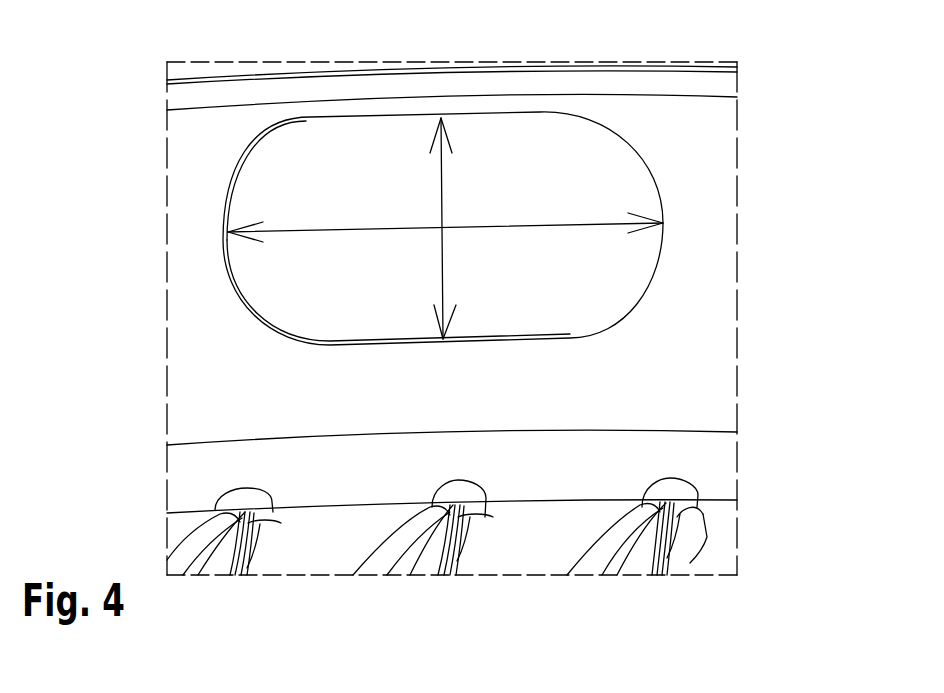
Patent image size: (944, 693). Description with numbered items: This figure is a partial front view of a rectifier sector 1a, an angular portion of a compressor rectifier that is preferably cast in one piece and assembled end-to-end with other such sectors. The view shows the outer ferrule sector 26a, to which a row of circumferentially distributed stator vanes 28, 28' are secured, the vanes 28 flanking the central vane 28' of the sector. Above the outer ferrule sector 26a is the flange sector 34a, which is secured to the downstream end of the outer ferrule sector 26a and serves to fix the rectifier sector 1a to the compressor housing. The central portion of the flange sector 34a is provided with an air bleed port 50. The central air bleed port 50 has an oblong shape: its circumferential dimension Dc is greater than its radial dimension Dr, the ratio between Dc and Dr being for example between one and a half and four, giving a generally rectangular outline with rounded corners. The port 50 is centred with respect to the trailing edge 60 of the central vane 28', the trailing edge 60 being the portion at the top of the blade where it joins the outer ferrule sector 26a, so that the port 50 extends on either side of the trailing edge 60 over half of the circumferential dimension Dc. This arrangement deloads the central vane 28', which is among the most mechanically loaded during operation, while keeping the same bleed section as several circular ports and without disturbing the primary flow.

The rectifier sector 1a is at (133, 143).
The radial dimension Dr is at (443, 187).
The circumferential dimension Dc is at (515, 223).
The air bleed port 50 is at (588, 176).
The flange sector 34a is at (673, 300).
The outer ferrule sector 26a is at (193, 480).
The stator vane 28 is at (437, 576).
The central stator vane 28' is at (411, 578).
The trailing edge 60 is at (281, 523).